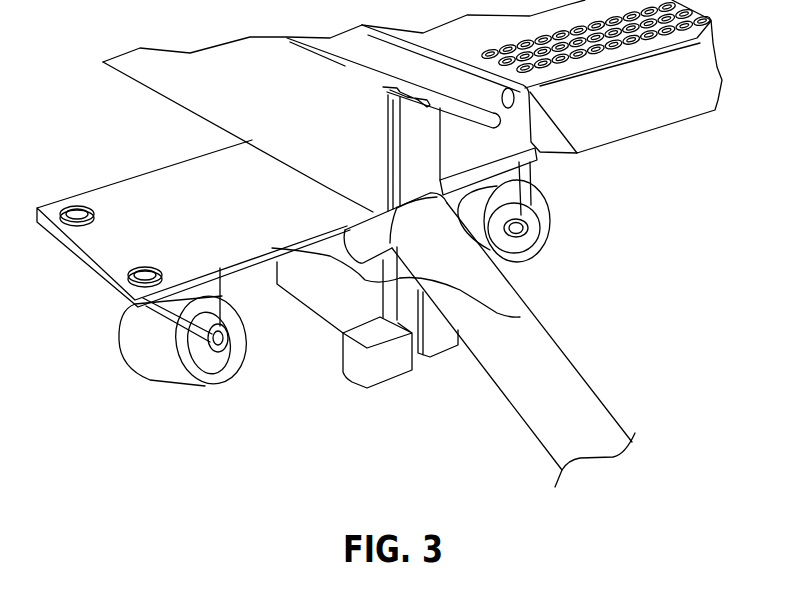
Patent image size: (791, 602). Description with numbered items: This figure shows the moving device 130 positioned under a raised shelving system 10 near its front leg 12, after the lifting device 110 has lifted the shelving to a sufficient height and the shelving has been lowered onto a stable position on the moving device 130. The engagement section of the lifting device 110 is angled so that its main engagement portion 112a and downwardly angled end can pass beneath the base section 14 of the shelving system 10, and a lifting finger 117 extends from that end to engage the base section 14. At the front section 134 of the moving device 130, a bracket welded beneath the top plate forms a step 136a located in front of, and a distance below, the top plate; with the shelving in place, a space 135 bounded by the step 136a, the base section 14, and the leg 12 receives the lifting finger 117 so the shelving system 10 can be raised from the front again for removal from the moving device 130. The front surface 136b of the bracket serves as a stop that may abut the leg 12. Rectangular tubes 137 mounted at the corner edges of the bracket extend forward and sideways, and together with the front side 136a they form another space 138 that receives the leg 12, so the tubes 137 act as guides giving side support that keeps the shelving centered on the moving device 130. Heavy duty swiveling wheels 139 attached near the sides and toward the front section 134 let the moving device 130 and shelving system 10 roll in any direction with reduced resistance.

The shelving system 10 is at (622, 122).
The front leg 12 is at (442, 337).
The base section 14 is at (277, 160).
The lifting device 110 is at (567, 386).
The main engagement portion 112a is at (347, 245).
The lifting finger 117 is at (348, 208).
The moving device 130 is at (253, 268).
The front section 134 is at (258, 312).
The space 135 is at (373, 213).
The step 136a is at (272, 248).
The front surface 136b is at (520, 317).
The tube 137 is at (360, 372).
The space 138 is at (430, 368).
The wheel 139 is at (157, 348).